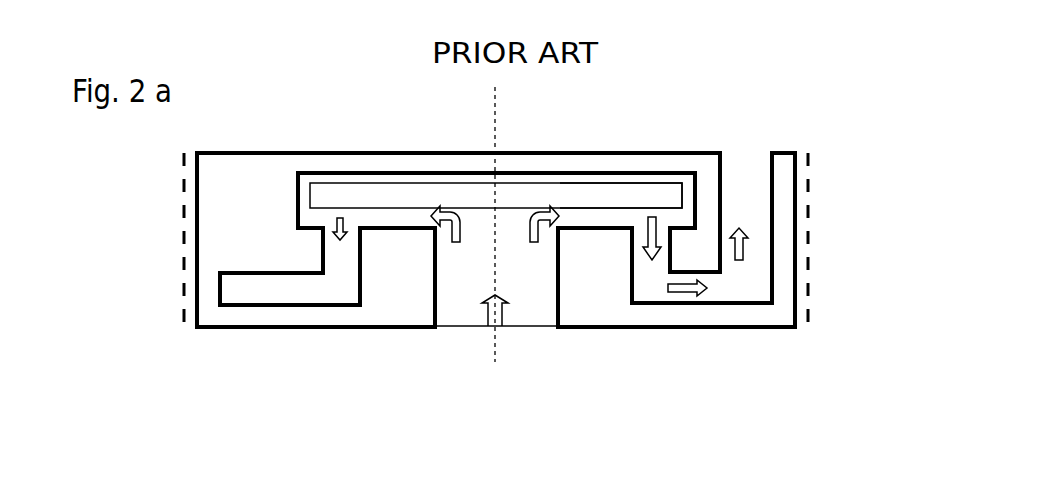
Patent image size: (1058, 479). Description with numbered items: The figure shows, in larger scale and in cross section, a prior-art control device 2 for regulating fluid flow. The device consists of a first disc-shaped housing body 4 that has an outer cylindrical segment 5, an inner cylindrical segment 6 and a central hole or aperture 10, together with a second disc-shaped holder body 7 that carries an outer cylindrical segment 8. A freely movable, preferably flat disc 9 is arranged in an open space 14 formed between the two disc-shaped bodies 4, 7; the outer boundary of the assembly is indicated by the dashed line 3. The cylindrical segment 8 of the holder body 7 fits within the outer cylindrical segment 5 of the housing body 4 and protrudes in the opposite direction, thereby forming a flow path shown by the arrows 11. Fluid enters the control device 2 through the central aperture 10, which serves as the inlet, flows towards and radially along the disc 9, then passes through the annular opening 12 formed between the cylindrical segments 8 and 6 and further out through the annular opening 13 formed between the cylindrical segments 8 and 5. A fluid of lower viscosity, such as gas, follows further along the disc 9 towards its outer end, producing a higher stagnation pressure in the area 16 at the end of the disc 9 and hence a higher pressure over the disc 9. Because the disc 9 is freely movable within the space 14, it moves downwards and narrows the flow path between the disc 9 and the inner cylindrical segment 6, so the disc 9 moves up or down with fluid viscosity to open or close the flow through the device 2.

The control device 2 is at (284, 341).
The housing boundary 3 is at (803, 165).
The first disc-shaped housing body 4 is at (740, 308).
The outer cylindrical segment 5 is at (782, 220).
The inner cylindrical segment 6 is at (575, 278).
The second disc-shaped holder body 7 is at (365, 167).
The outer cylindrical segment 8 is at (710, 200).
The disc 9 is at (480, 202).
The central hole or aperture 10 is at (463, 263).
The arrows 11 is at (496, 328).
The annular opening 12 is at (648, 267).
The annular opening 13 is at (748, 223).
The open space 14 is at (297, 188).
The area at the end of the disc 16 is at (682, 212).